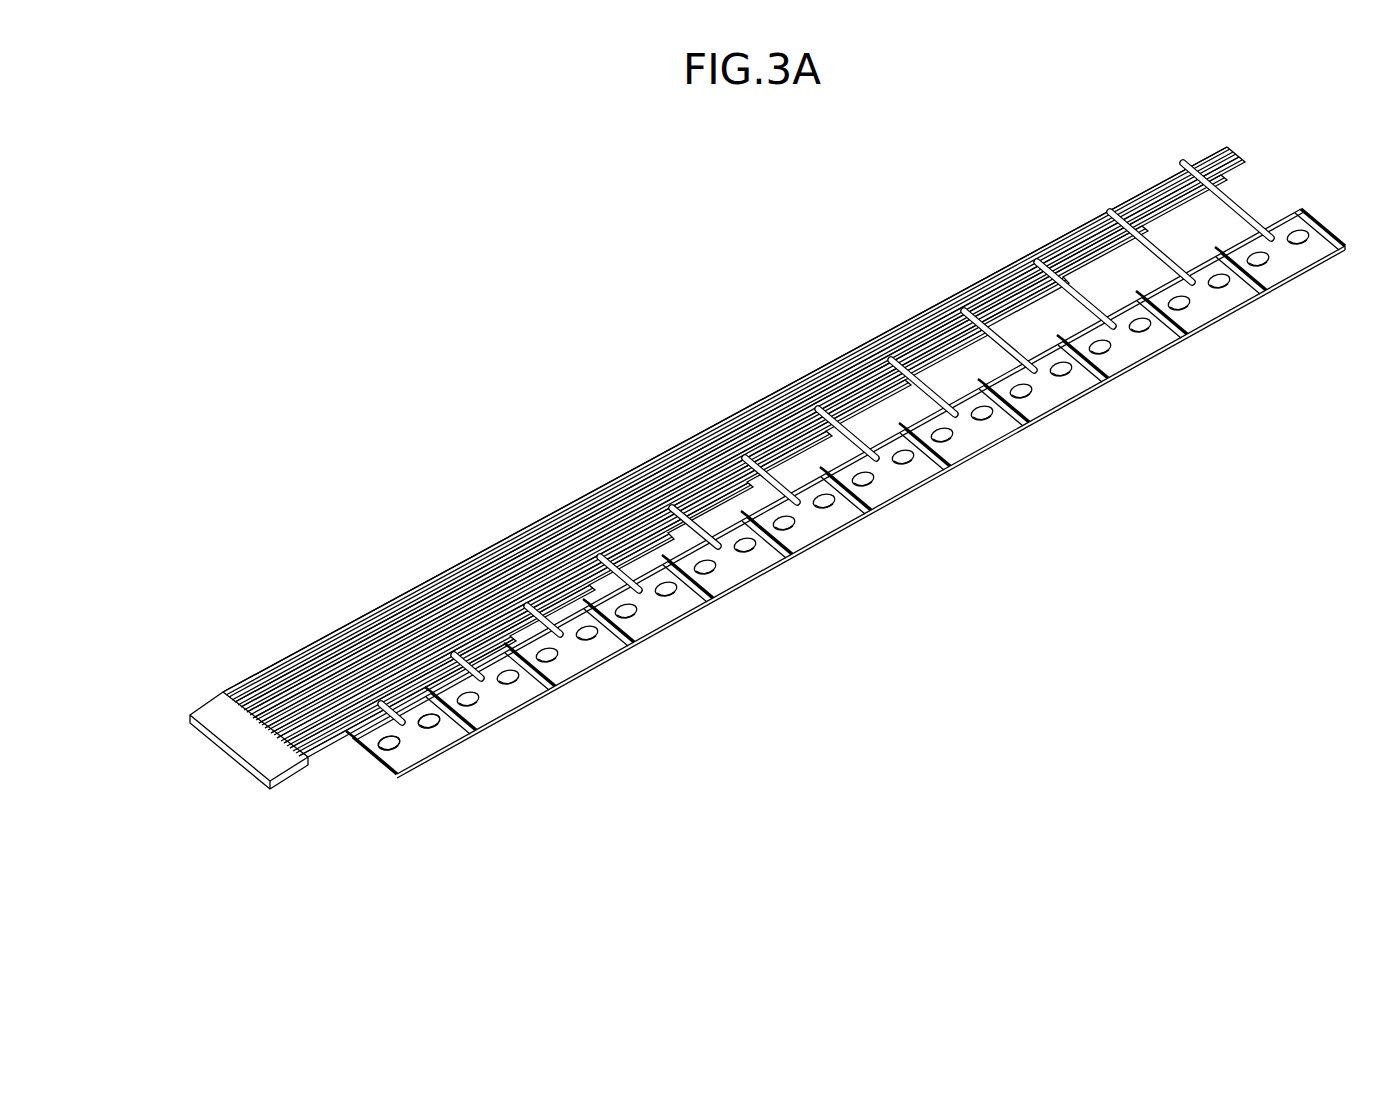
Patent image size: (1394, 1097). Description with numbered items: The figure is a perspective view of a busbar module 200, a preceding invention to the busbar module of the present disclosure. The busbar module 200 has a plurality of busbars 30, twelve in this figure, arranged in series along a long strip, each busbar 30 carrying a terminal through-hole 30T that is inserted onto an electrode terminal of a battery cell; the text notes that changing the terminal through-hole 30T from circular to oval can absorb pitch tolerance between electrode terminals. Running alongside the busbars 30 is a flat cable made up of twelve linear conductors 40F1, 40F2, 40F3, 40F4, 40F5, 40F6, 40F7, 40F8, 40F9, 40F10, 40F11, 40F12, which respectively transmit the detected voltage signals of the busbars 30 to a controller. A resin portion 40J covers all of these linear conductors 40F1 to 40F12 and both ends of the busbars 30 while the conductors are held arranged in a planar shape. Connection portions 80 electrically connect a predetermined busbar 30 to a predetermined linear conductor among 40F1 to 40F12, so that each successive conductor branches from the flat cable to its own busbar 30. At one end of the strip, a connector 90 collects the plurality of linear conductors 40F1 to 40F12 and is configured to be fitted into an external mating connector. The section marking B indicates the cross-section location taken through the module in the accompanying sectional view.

The busbar module 200 is at (749, 180).
The connection portion 80 is at (385, 708).
The busbar 30 is at (423, 745).
The terminal through-hole 30T is at (396, 746).
The linear conductor 40F1 is at (282, 703).
The linear conductor 40F2 is at (400, 705).
The linear conductor 40F3 is at (481, 606).
The linear conductor 40F4 is at (560, 559).
The linear conductor 40F5 is at (639, 512).
The linear conductor 40F6 is at (718, 465).
The linear conductor 40F7 is at (797, 418).
The linear conductor 40F8 is at (876, 371).
The linear conductor 40F9 is at (955, 324).
The linear conductor 40F10 is at (1034, 277).
The linear conductor 40F11 is at (1113, 230).
The linear conductor 40F12 is at (1192, 182).
The resin portion 40J is at (272, 682).
The connector 90 is at (224, 758).
The section line B is at (432, 590).